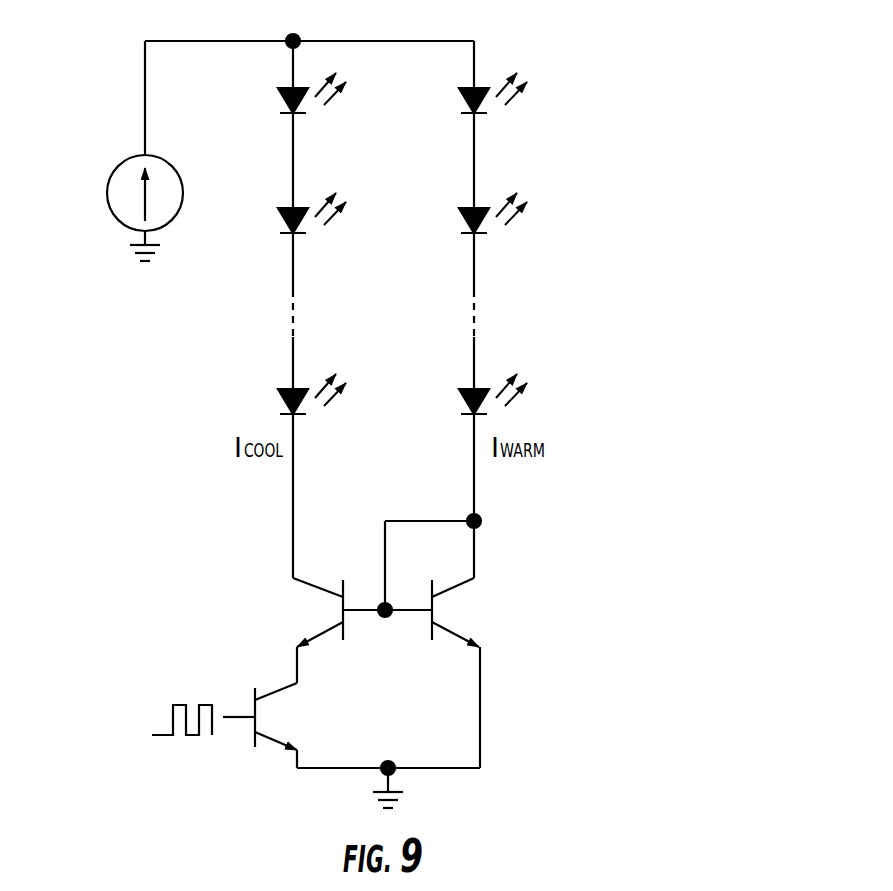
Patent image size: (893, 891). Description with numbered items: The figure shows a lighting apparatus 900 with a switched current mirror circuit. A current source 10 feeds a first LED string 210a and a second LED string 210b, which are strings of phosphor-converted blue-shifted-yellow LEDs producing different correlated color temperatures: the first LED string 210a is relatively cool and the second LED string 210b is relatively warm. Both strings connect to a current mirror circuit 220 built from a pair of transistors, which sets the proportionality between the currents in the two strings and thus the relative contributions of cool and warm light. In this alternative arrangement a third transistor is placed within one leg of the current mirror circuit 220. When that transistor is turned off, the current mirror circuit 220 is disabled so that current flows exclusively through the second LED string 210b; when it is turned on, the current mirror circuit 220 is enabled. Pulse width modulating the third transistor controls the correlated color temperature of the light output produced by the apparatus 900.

The lighting apparatus 900 is at (690, 90).
The current source 10 is at (107, 190).
The first LED string 210a is at (308, 193).
The second LED string 210b is at (527, 183).
The current mirror circuit 220 is at (505, 683).